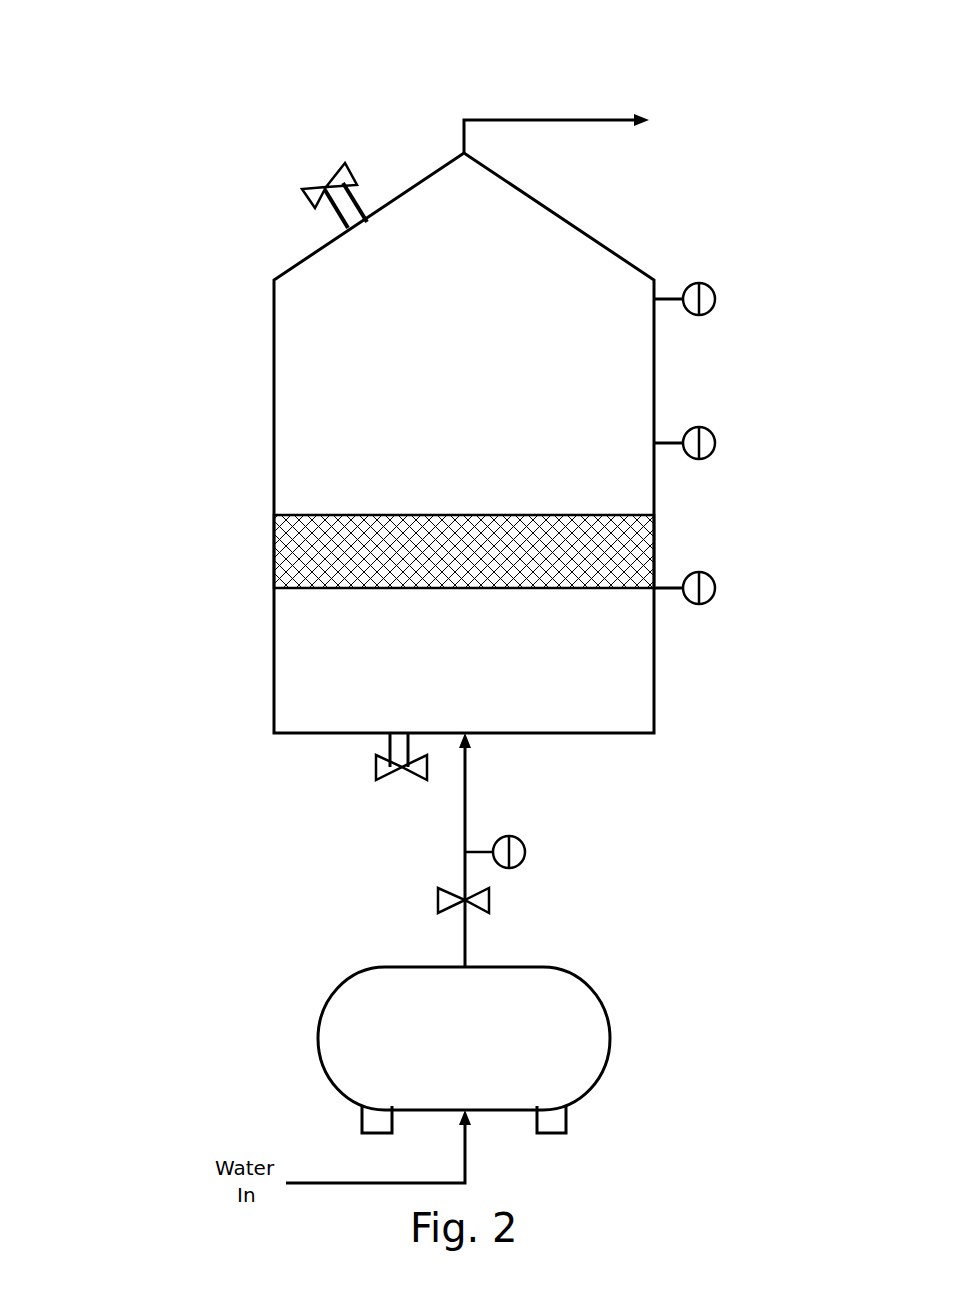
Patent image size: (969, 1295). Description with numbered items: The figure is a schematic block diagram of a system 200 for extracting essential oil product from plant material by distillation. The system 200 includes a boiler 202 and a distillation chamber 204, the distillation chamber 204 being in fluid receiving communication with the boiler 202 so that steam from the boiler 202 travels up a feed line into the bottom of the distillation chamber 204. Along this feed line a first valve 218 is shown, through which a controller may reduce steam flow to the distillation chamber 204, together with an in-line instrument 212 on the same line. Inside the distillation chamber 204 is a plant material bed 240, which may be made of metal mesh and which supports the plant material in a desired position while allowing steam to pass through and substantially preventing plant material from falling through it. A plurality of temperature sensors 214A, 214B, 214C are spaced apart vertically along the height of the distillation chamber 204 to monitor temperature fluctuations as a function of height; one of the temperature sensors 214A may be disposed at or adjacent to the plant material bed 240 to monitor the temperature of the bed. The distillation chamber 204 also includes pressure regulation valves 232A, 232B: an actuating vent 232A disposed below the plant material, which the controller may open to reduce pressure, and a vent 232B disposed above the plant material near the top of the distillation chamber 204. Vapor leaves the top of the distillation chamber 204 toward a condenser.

The system 200 is at (80, 45).
The boiler 202 is at (556, 1079).
The distillation chamber 204 is at (285, 406).
The flow meter 212 is at (520, 839).
The temperature sensor 214A is at (699, 572).
The temperature sensor 214B is at (699, 427).
The temperature sensor 214C is at (699, 283).
The first valve 218 is at (438, 897).
The actuating vent 232A is at (374, 770).
The vent 232B is at (302, 188).
The plant material bed 240 is at (287, 559).